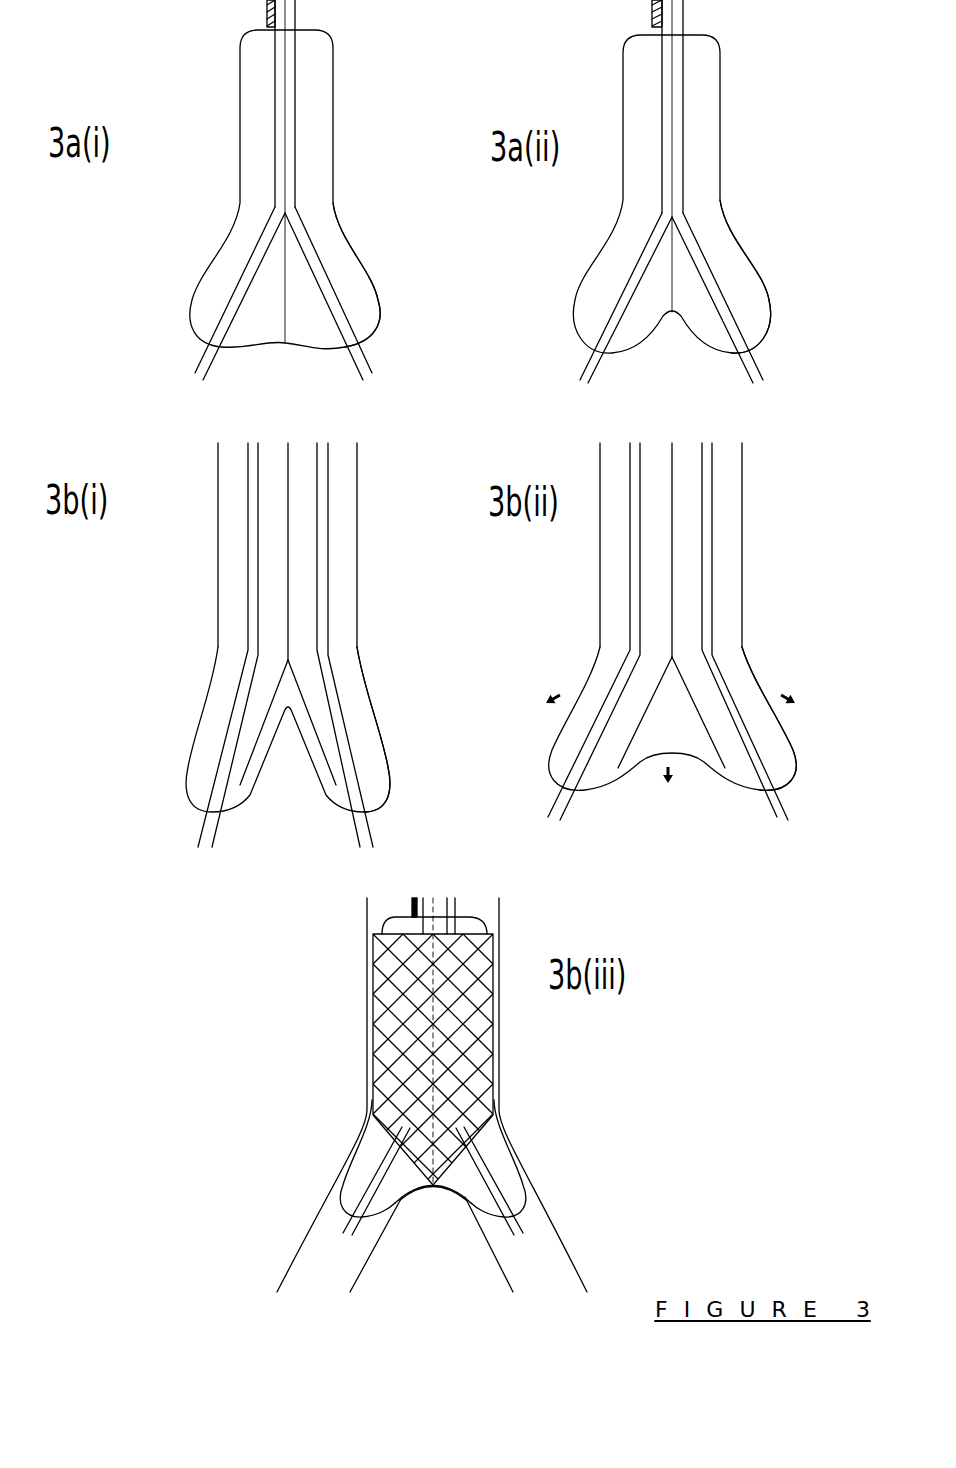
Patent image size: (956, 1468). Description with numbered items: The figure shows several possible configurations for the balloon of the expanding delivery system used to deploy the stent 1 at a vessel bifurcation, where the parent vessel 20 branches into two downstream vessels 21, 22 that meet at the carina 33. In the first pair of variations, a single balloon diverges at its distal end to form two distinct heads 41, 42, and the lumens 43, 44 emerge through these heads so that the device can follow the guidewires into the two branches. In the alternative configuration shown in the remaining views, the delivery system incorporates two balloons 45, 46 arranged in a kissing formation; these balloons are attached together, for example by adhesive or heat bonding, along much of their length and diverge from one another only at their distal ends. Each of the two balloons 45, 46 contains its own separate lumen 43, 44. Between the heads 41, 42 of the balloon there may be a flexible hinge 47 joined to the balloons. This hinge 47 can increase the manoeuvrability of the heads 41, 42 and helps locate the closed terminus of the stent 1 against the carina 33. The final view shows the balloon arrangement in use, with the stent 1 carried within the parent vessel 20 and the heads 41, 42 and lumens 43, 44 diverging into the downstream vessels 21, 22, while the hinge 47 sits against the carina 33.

The stent 1 is at (375, 1005).
The parent vessel 20 is at (367, 913).
The downstream vessel 21 is at (287, 1267).
The downstream vessel 22 is at (572, 1258).
The carina 33 is at (430, 1192).
The head 41 is at (197, 334).
The head 42 is at (363, 340).
The lumen 43 is at (195, 378).
The lumen 44 is at (372, 375).
The balloon 45 is at (218, 593).
The balloon 46 is at (357, 603).
The flexible hinge 47 is at (288, 716).